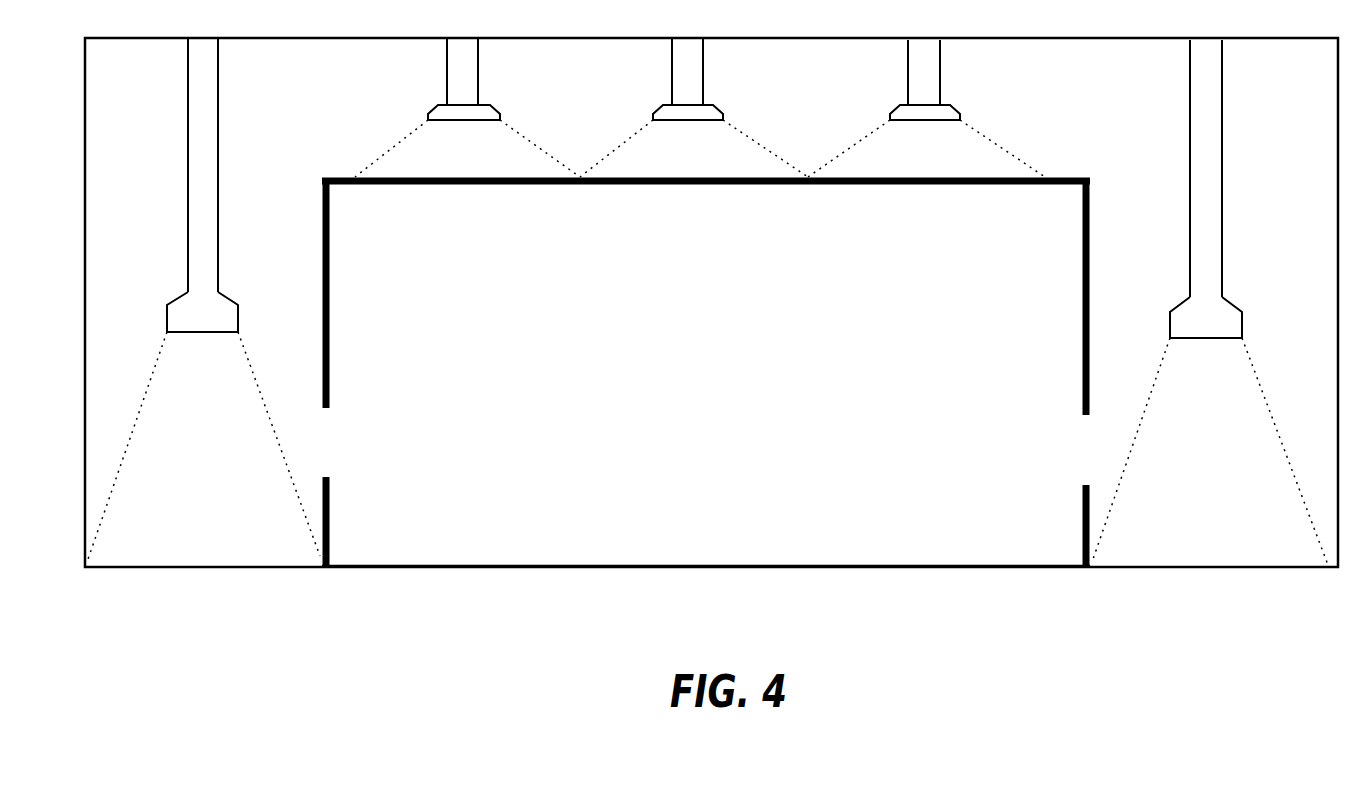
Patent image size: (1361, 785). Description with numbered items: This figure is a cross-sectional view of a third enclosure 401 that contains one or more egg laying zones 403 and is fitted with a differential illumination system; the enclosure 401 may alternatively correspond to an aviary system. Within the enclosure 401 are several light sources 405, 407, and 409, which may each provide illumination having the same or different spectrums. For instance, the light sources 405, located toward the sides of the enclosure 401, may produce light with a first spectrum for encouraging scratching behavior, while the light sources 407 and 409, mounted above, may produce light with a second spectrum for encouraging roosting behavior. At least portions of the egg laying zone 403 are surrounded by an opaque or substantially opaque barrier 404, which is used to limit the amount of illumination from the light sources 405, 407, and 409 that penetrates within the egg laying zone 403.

The enclosure 401 is at (1082, 40).
The egg laying zone 403 is at (1066, 257).
The opaque barrier 404 is at (1083, 178).
The light source 405 is at (220, 300).
The light source 407 is at (482, 108).
The light source 409 is at (707, 108).